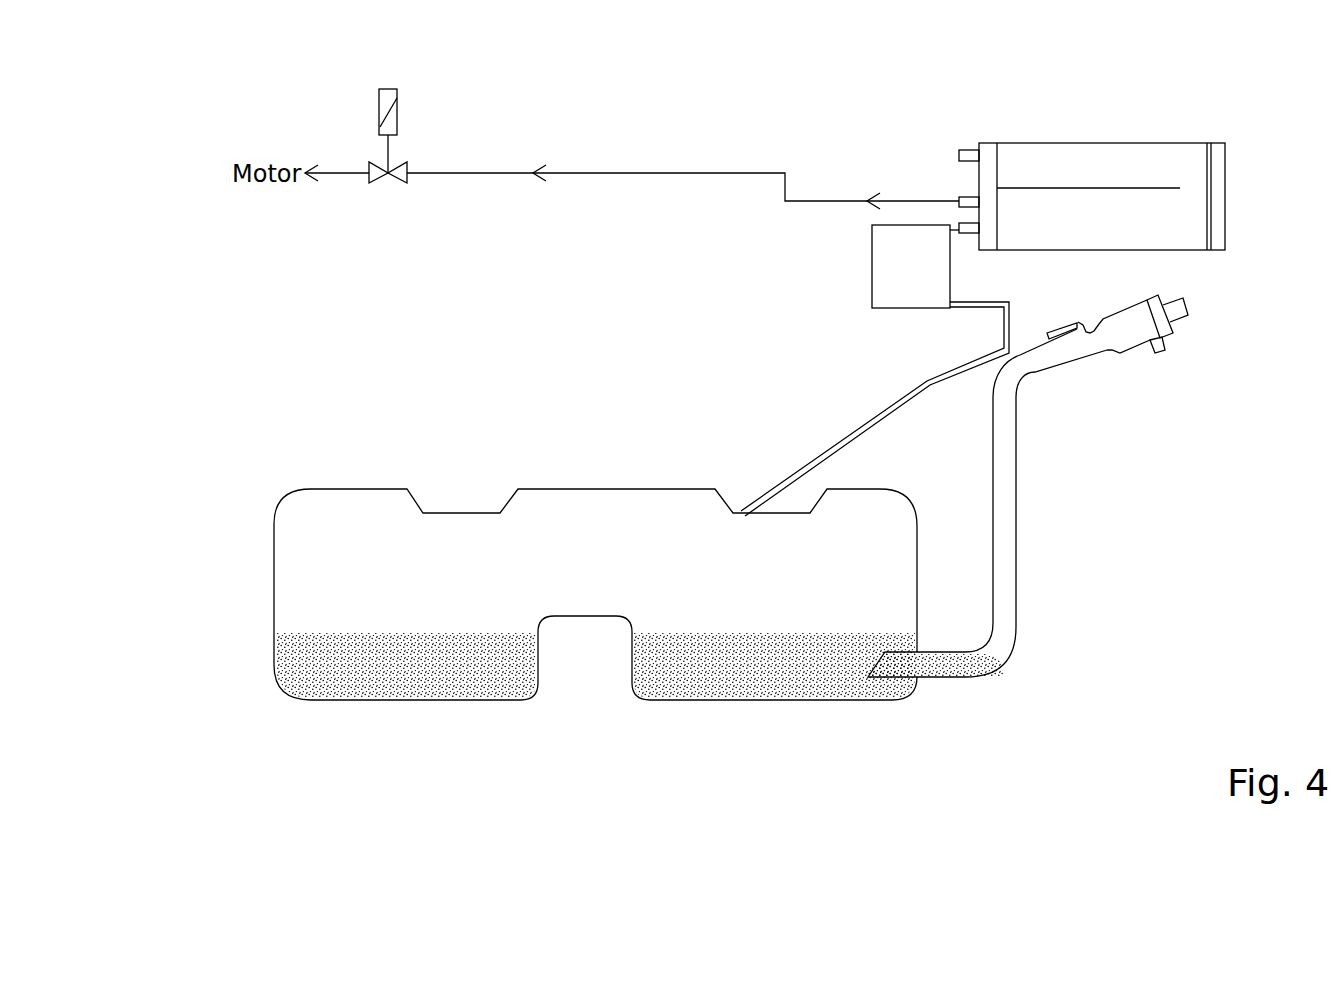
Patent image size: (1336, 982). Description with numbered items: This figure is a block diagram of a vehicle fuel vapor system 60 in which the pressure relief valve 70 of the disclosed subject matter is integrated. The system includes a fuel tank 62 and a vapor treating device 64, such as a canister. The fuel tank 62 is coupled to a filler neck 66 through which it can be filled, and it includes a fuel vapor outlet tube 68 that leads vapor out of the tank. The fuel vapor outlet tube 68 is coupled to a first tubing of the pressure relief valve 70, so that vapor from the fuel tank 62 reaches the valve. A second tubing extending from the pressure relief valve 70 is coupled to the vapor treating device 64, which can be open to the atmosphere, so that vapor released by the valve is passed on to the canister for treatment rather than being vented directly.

The vehicle fuel vapor system 60 is at (207, 385).
The fuel tank 62 is at (298, 593).
The vapor treating device 64 is at (1080, 143).
The filler neck 66 is at (1003, 523).
The fuel vapor outlet tube 68 is at (813, 458).
The pressure relief valve 70 is at (890, 265).